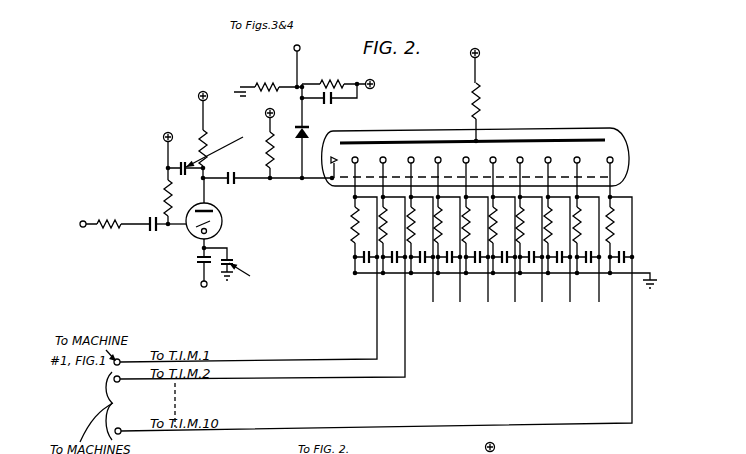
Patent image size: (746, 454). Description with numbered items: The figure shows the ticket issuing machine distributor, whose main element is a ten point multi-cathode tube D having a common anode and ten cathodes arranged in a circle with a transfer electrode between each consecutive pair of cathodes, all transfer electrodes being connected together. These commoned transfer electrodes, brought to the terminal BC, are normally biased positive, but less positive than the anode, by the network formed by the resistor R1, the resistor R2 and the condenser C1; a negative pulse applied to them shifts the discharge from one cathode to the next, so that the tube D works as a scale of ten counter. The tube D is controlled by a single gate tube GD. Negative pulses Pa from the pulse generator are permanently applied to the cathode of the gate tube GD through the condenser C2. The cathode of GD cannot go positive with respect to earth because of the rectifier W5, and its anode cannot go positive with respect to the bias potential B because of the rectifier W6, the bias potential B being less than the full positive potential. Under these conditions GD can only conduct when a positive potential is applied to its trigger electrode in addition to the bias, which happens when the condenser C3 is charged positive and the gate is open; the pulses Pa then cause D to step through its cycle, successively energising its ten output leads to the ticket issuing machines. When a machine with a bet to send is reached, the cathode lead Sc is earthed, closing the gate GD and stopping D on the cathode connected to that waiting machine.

The bias terminal of transfer-electrode network BC is at (309, 64).
The resistor R1 is at (268, 81).
The resistor R2 is at (338, 76).
The condenser C1 is at (328, 103).
The bias potential B is at (160, 177).
The rectifier W6 is at (205, 155).
The cathode lead Sc is at (115, 234).
The condenser C3 is at (160, 233).
The gate tube GD is at (216, 213).
The condenser C2 is at (194, 263).
The pulses Pa is at (213, 291).
The rectifier W5 is at (238, 267).
The multi-cathode tube D is at (475, 118).